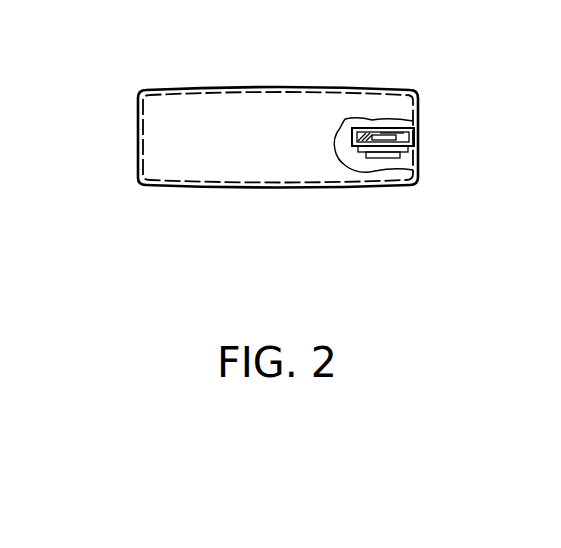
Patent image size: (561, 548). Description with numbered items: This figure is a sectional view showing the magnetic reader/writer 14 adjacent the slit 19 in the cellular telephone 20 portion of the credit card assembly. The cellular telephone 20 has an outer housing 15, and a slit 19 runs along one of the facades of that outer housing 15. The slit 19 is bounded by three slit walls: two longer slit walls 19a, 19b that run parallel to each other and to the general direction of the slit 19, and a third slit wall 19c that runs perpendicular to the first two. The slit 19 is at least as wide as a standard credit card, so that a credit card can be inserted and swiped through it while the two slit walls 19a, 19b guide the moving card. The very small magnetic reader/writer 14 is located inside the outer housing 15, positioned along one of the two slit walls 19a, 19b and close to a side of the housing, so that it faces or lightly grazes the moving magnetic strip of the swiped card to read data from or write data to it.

The magnetic reader/writer 14 is at (358, 138).
The outer housing 15 is at (305, 190).
The slit 19 is at (412, 158).
The slit wall 19a is at (362, 137).
The slit wall 19b is at (402, 147).
The third slit wall 19c is at (363, 137).
The cellular telephone 20 is at (375, 90).